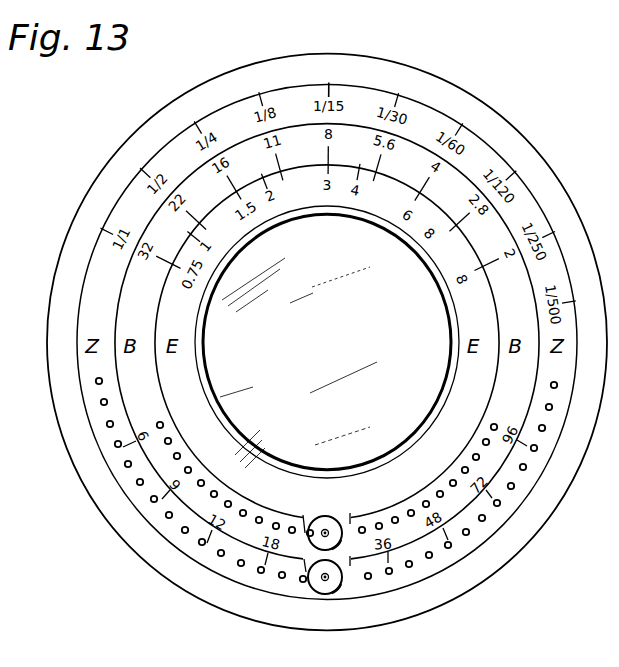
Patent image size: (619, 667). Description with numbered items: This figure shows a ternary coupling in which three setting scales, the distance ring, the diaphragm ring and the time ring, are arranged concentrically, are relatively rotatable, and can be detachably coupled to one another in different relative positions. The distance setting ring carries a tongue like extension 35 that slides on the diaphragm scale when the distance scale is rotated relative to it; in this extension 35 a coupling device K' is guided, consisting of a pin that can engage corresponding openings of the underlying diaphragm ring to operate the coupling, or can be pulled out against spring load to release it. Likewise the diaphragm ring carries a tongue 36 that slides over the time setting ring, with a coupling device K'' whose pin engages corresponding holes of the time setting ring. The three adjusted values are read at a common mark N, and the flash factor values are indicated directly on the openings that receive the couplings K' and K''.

The common mark N is at (329, 72).
The coupling device K' is at (338, 518).
The coupling device K'' is at (339, 613).
The tongue like extension 35 is at (306, 533).
The tongue 36 is at (306, 565).